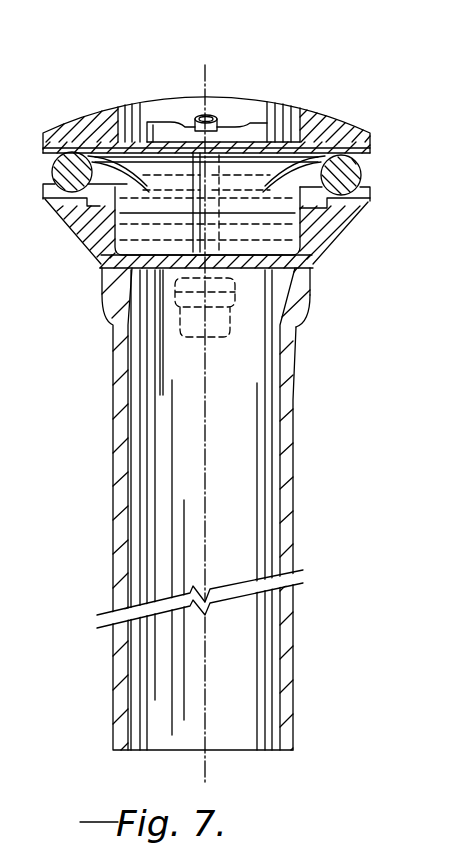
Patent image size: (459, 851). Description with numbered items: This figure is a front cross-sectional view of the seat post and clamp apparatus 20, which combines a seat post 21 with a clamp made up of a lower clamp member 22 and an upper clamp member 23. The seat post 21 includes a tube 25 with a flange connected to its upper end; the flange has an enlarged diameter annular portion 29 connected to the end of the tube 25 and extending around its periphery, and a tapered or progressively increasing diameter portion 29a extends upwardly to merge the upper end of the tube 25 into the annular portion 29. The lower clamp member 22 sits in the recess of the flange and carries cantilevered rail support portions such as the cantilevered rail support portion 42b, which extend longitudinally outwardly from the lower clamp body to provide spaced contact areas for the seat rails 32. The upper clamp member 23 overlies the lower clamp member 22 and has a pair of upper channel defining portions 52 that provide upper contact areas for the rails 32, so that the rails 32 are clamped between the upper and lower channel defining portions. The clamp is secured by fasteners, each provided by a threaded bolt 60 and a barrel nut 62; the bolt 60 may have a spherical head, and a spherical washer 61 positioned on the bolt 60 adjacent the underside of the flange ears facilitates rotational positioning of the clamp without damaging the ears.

The apparatus 20 is at (251, 84).
The seat post 21 is at (101, 555).
The lower clamp member 22 is at (81, 258).
The upper clamp member 23 is at (152, 92).
The tube 25 is at (294, 462).
The enlarged diameter annular portion 29 is at (312, 283).
The tapered portion 29a is at (304, 302).
The seat rails 32 is at (46, 163).
The cantilevered rail support portion 42b is at (350, 212).
The upper channel defining portions 52 is at (110, 104).
The threaded bolt 60 is at (140, 375).
The spherical washer 61 is at (176, 302).
The barrel nut 62 is at (246, 130).